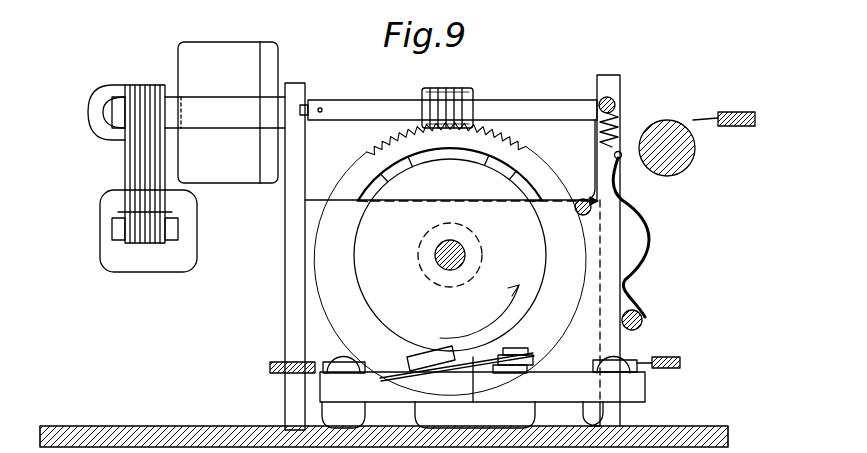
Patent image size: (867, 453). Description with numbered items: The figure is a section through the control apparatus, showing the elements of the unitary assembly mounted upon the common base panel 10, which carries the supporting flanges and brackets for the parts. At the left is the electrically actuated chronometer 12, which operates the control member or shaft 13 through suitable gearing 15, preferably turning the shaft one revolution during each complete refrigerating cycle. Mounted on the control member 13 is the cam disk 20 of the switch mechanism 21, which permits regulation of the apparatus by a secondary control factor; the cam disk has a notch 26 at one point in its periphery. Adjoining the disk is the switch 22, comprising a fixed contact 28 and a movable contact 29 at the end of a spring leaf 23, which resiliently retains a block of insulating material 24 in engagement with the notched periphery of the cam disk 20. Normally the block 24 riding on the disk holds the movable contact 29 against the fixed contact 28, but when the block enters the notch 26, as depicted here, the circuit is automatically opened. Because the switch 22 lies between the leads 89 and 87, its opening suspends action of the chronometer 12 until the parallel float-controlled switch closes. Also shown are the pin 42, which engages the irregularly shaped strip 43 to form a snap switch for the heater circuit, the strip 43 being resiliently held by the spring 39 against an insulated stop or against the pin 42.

The base panel 10 is at (706, 426).
The chronometer 12 is at (133, 163).
The control member 13 is at (466, 255).
The gearing 15 is at (473, 98).
The cam disk 20 is at (512, 190).
The switch mechanism 21 is at (444, 347).
The switch 22 is at (535, 369).
The spring leaf 23 is at (482, 392).
The block of insulating material 24 is at (405, 358).
The notch 26 is at (450, 354).
The fixed contact 28 is at (522, 372).
The movable contact 29 is at (515, 348).
The spring 39 is at (622, 147).
The pin 42 is at (572, 228).
The strip 43 is at (650, 240).
The lead 87 is at (275, 362).
The lead 89 is at (673, 357).